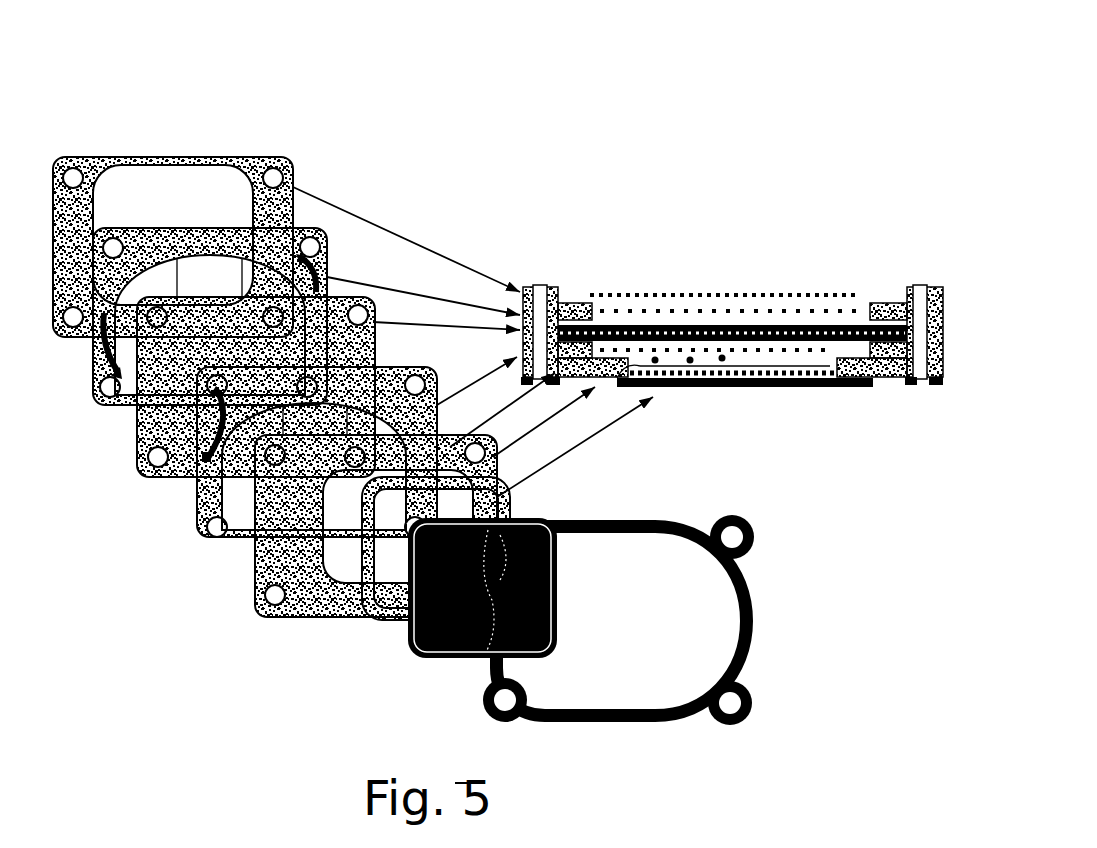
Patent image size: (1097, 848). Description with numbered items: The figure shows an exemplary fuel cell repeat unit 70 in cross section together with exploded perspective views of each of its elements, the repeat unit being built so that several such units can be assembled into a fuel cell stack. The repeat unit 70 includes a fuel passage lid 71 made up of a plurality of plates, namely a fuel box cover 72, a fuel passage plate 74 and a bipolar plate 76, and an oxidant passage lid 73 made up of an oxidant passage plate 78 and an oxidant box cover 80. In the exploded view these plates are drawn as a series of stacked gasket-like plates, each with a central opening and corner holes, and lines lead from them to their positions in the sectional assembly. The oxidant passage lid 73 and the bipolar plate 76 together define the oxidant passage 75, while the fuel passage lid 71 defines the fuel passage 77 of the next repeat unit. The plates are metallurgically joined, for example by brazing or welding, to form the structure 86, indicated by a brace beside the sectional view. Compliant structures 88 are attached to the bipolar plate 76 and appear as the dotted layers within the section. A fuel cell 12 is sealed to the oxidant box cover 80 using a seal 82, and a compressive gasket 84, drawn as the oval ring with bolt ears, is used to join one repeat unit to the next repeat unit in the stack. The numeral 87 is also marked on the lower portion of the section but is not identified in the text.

The fuel cell repeat unit 70 is at (559, 400).
The fuel box cover 72 is at (246, 157).
The fuel passage plate 74 is at (87, 370).
The bipolar plate 76 is at (138, 437).
The oxidant passage plate 78 is at (193, 513).
The oxidant box cover 80 is at (256, 577).
The seal 82 is at (385, 620).
The fuel cell 12 is at (430, 663).
The compressive gasket 84 is at (538, 712).
The structure 86 is at (803, 346).
The fuel passage lid 71 is at (945, 323).
The oxidant passage lid 73 is at (945, 347).
The fuel passage 77 is at (687, 310).
The compliant structures 88 is at (750, 300).
The spacers 87 is at (712, 388).
The oxidant passage 75 is at (772, 388).